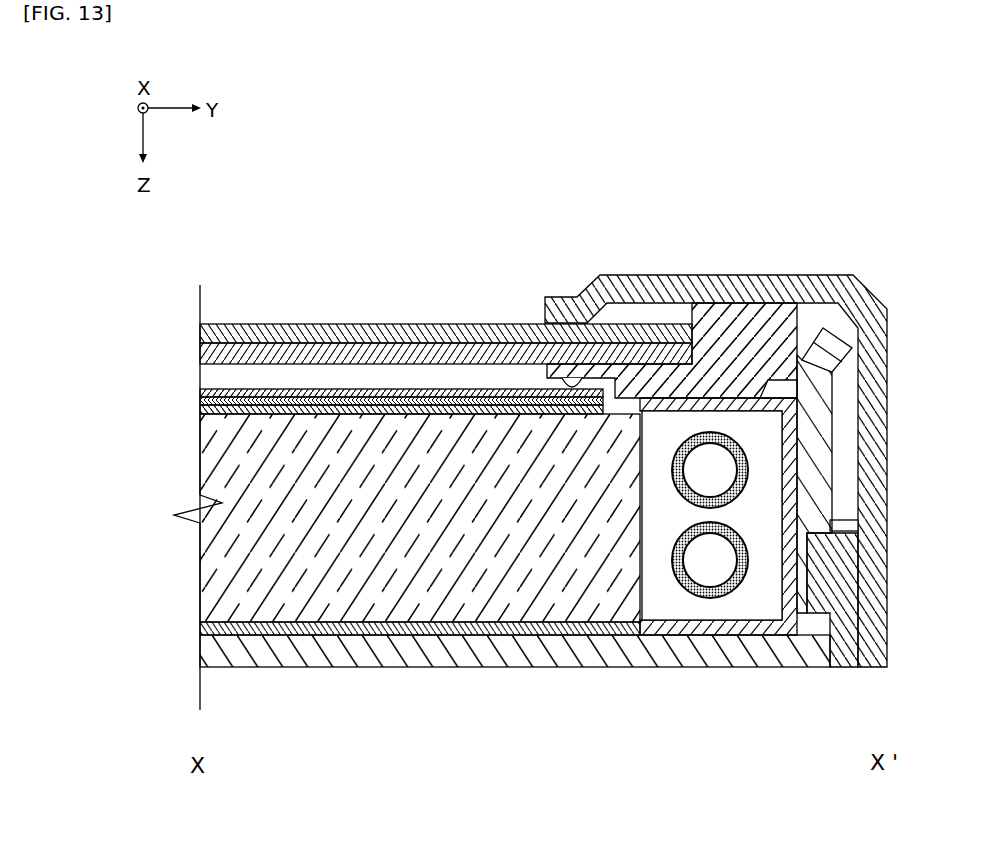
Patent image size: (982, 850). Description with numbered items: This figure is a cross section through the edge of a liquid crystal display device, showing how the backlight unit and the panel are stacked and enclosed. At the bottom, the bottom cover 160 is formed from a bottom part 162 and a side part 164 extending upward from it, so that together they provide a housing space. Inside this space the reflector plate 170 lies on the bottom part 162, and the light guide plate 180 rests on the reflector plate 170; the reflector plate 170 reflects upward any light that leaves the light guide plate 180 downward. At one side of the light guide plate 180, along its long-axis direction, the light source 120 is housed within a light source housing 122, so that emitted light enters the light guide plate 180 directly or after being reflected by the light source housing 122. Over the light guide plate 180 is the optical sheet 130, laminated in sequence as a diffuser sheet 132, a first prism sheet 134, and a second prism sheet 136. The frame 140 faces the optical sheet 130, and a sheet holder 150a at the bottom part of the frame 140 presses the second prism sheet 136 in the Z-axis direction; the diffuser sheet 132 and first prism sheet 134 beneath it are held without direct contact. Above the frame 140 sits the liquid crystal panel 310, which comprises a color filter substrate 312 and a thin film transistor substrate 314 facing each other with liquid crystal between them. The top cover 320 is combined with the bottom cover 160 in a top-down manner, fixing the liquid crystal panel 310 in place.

The light source 120 is at (683, 594).
The light source housing 122 is at (643, 636).
The optical sheet 130 is at (332, 401).
The diffuser sheet 132 is at (210, 418).
The first prism sheet 134 is at (210, 400).
The second prism sheet 136 is at (210, 390).
The frame 140 is at (737, 345).
The sheet holder 150a is at (575, 384).
The bottom cover 160 is at (526, 554).
The bottom part 162 is at (735, 654).
The side part 164 is at (815, 482).
The reflector plate 170 is at (205, 627).
The light guide plate 180 is at (210, 562).
The liquid crystal panel 310 is at (377, 328).
The color filter substrate 312 is at (210, 325).
The thin film transistor substrate 314 is at (210, 343).
The top cover 320 is at (822, 292).